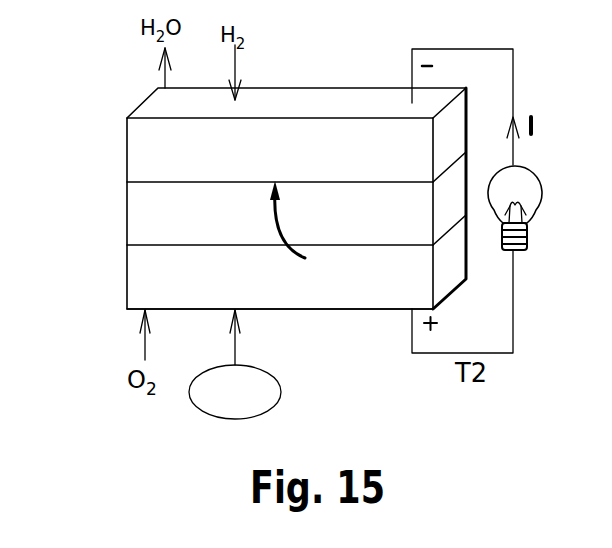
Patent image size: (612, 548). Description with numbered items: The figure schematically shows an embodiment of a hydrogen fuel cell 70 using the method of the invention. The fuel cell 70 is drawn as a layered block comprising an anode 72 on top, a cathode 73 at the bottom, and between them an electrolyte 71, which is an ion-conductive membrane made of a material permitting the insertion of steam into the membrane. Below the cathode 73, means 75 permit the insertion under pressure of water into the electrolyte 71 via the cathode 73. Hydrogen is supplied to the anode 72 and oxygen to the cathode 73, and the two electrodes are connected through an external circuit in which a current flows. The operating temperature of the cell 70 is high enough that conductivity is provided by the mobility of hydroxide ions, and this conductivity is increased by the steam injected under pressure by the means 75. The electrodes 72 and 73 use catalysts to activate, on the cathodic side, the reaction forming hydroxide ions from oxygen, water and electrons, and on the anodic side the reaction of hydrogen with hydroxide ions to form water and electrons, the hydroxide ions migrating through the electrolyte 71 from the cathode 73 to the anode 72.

The hydrogen fuel cell 70 is at (133, 86).
The electrolyte 71 is at (163, 230).
The anode 72 is at (163, 164).
The cathode 73 is at (163, 293).
The means permitting the insertion under pressure of water 75 is at (290, 417).